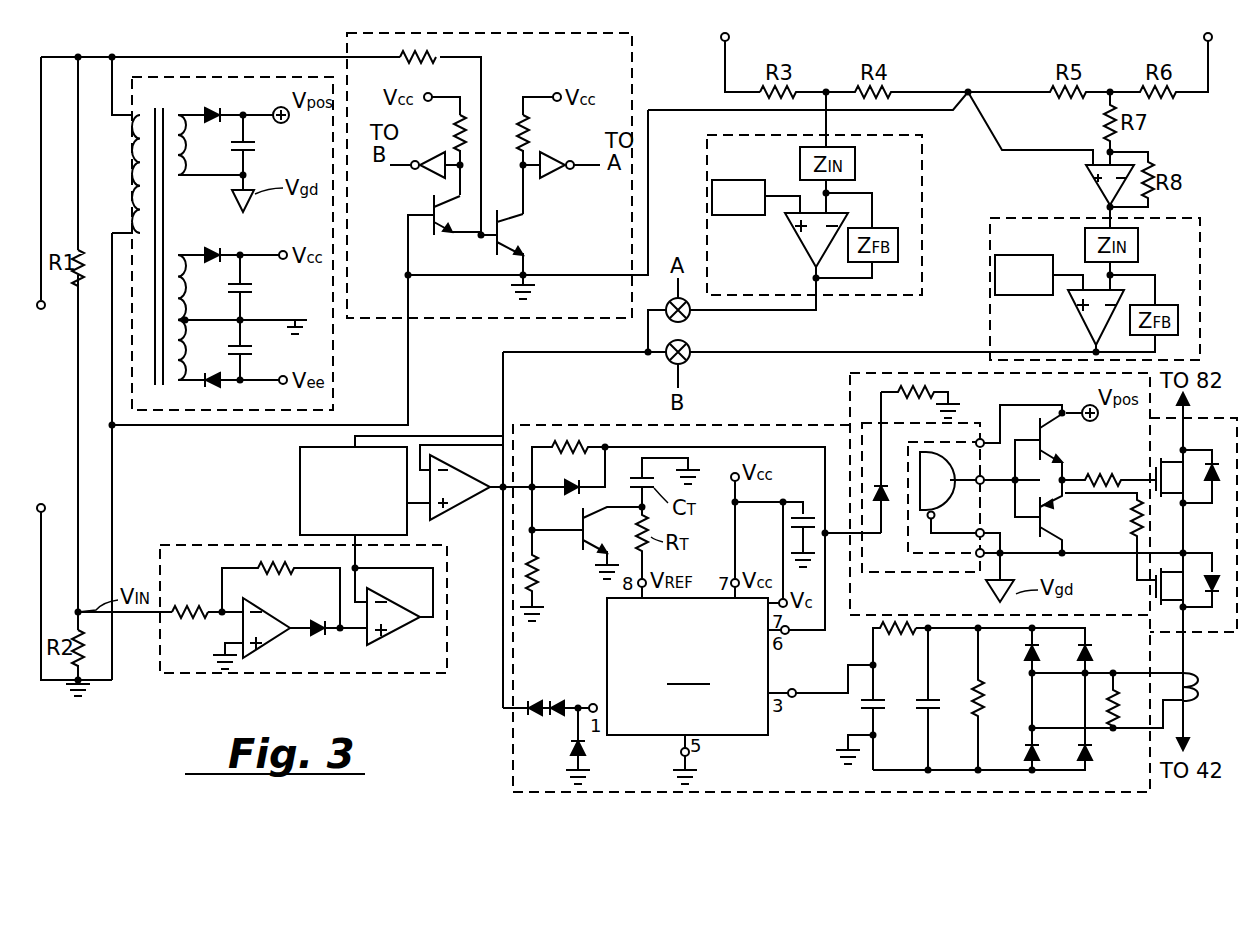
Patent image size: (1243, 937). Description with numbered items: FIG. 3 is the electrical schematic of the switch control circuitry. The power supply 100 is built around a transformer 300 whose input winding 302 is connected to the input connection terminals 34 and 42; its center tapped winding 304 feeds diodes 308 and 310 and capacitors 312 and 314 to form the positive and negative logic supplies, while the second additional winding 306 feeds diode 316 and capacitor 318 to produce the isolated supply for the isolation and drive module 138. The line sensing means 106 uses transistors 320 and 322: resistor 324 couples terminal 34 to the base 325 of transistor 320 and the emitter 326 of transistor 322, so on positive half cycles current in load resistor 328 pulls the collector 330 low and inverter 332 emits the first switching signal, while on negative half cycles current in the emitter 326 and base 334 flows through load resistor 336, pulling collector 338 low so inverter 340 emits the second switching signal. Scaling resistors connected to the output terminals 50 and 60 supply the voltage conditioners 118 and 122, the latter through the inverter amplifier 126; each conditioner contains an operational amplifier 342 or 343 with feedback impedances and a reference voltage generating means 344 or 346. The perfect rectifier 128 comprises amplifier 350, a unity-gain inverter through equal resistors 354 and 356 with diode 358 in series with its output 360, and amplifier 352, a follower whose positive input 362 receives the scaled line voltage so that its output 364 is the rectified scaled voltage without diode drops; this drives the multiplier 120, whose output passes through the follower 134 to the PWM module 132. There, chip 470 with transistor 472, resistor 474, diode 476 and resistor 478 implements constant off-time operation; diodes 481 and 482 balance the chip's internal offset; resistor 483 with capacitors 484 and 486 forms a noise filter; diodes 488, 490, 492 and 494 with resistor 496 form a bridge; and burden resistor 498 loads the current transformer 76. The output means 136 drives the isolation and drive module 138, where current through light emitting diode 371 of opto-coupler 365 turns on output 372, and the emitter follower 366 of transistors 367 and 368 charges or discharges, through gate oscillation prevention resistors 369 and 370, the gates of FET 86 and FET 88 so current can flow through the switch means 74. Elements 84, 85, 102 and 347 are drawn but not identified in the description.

The input connection means 34 is at (45, 309).
The input connection means 42 is at (45, 504).
The output connection means 50 is at (730, 39).
The output connection means 60 is at (1204, 37).
The switch means 74 is at (1225, 632).
The current sensing means 76 is at (1188, 694).
The diode 84 is at (1220, 460).
The diode 85 is at (1218, 572).
The FET 86 is at (1168, 496).
The FET 88 is at (1172, 601).
The power supply 100 is at (185, 77).
The primary winding 102 is at (112, 174).
The line sensing means 106 is at (632, 57).
The voltage conditioner 118 is at (925, 178).
The multiplier 120 is at (300, 470).
The voltage conditioner 122 is at (1002, 216).
The inverter amplifier 126 is at (1078, 182).
The perfect rectifier 128 is at (224, 543).
The pulse width modulation module 132 is at (513, 740).
The voltage follower 134 is at (460, 500).
The output means 136 is at (843, 548).
The isolation and drive module 138 is at (850, 415).
The transformer 300 is at (153, 233).
The input winding 302 is at (144, 120).
The first additional winding 304 is at (178, 275).
The second additional winding 306 is at (176, 147).
The diode 308 is at (209, 252).
The diode 310 is at (214, 386).
The capacitor 312 is at (254, 291).
The capacitor 314 is at (196, 350).
The diode 316 is at (213, 110).
The capacitor 318 is at (256, 147).
The transistor 320 is at (528, 240).
The transistor 322 is at (429, 257).
The resistor 324 is at (422, 65).
The base 325 is at (494, 210).
The emitter 326 is at (444, 230).
The load resistor 328 is at (528, 132).
The collector 330 is at (523, 218).
The inverter 332 is at (560, 177).
The base 334 is at (432, 213).
The load resistor 336 is at (458, 135).
The collector 338 is at (432, 213).
The inverter 340 is at (430, 172).
The operational amplifier 342 is at (798, 236).
The operational amplifier 343 is at (1087, 314).
The reference voltage generating means 344 is at (728, 180).
The reference voltage generating means 346 is at (1050, 255).
The amplifier output 347 is at (776, 271).
The operational amplifier 350 is at (272, 612).
The operational amplifier 352 is at (395, 590).
The resistor 354 is at (190, 605).
The resistor 356 is at (285, 558).
The diode 358 is at (345, 653).
The output 360 is at (302, 636).
The positive input 362 is at (374, 673).
The output 364 is at (460, 626).
The opto-coupler 365 is at (821, 387).
The emitter follower 366 is at (1058, 522).
The transistor 367 is at (1016, 536).
The transistor 368 is at (1050, 429).
The gate oscillation prevention resistor 369 is at (1108, 466).
The gate oscillation prevention resistor 370 is at (1133, 533).
The light emitting diode 371 is at (893, 503).
The output 372 is at (985, 482).
The chip 470 is at (687, 666).
The transistor 472 is at (581, 550).
The resistor 474 is at (578, 442).
The diode 476 is at (575, 494).
The resistor 478 is at (557, 604).
The diode 481 is at (557, 725).
The diode 482 is at (536, 704).
The resistor 483 is at (893, 635).
The capacitor 484 is at (886, 700).
The capacitor 486 is at (953, 684).
The diode 488 is at (1038, 658).
The diode 490 is at (1025, 752).
The diode 492 is at (1088, 655).
The diode 494 is at (1090, 758).
The resistor 496 is at (1118, 710).
The burden resistor 498 is at (982, 699).